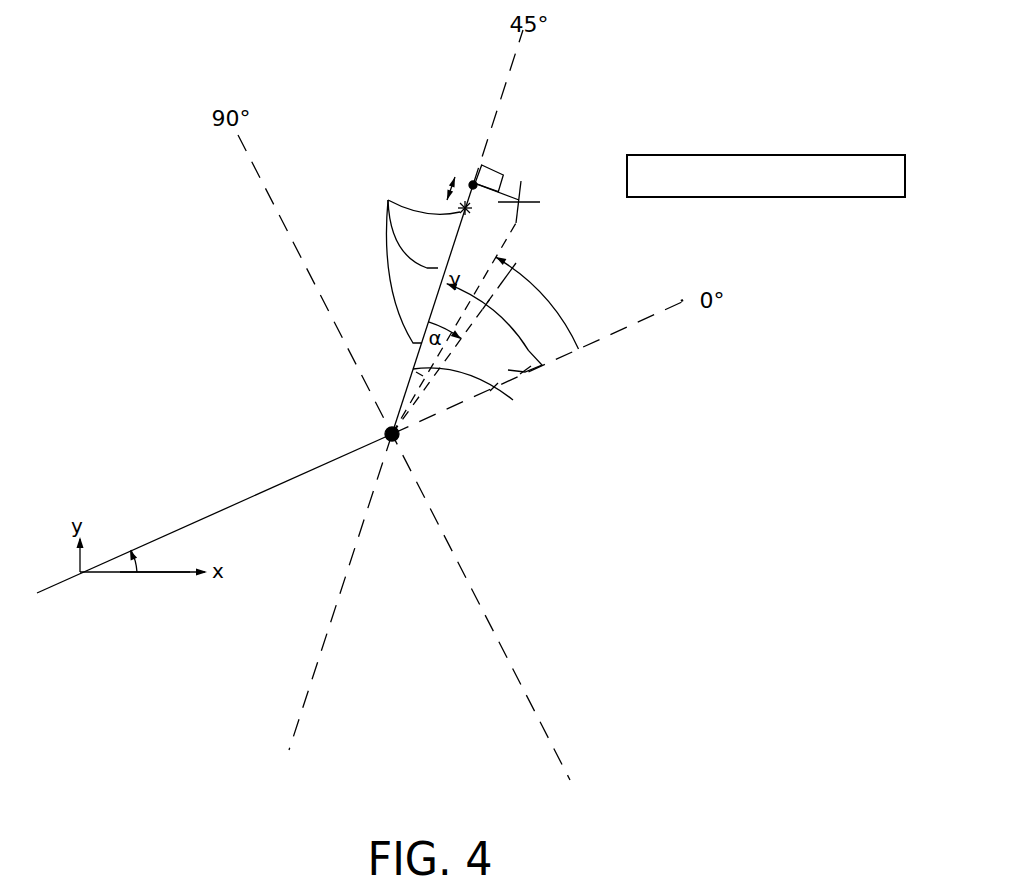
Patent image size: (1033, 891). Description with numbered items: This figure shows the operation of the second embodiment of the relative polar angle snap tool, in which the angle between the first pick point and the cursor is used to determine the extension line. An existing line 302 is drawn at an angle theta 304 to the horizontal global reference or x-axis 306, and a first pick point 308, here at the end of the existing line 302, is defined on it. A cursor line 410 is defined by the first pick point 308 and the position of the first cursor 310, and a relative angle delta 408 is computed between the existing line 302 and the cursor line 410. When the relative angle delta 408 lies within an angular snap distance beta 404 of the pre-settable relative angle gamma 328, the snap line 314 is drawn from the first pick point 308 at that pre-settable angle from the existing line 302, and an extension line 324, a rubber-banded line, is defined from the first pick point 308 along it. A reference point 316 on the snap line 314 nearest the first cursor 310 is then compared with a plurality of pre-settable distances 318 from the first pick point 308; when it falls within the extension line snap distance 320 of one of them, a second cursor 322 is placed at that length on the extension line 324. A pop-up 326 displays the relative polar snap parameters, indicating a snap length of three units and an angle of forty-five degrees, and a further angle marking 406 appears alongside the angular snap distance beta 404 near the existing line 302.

The existing line 302 is at (165, 533).
The angle θ 304 is at (145, 563).
The x-axis 306 is at (163, 573).
The first pick point 308 is at (400, 434).
The first cursor 310 is at (522, 186).
The snap line 314 is at (500, 102).
The reference point 316 is at (472, 181).
The pre-settable distances 318 is at (410, 258).
The extension line snap distance 320 is at (452, 187).
The second cursor 322 is at (468, 212).
The extension line 324 is at (410, 383).
The pop-up 326 is at (767, 155).
The pre-settable relative angle γ 328 is at (532, 348).
The angular distance β 404 is at (523, 372).
The angle arc 406 is at (483, 400).
The relative angle δ 408 is at (548, 300).
The cursor line 410 is at (500, 240).